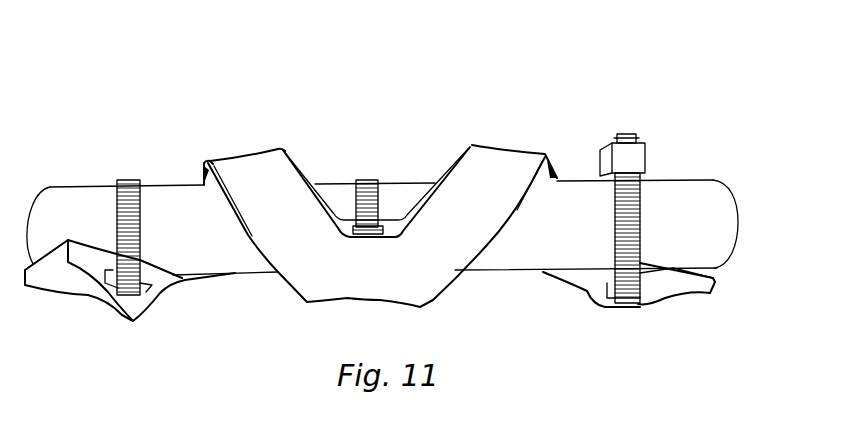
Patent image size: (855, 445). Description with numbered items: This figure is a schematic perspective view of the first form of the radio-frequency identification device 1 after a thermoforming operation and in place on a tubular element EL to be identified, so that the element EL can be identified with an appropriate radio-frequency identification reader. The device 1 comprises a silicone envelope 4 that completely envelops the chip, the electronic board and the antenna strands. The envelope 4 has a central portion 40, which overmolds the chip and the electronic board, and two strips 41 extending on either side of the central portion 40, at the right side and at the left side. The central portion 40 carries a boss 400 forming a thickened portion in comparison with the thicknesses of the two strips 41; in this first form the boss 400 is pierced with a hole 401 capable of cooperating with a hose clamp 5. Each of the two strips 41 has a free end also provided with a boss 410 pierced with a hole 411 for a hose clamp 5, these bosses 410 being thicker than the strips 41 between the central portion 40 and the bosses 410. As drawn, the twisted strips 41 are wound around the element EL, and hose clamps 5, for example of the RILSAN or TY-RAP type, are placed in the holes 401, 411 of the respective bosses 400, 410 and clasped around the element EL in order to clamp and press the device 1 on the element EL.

The radio-frequency identification device 1 is at (236, 105).
The envelope 4 is at (376, 226).
The central portion 40 is at (371, 234).
The boss 400 is at (371, 224).
The hole 401 is at (390, 213).
The strips 41 is at (230, 177).
The boss 410 is at (376, 295).
The hole 411 is at (143, 290).
The hose clamp 5 is at (123, 187).
The tubular element EL is at (708, 197).